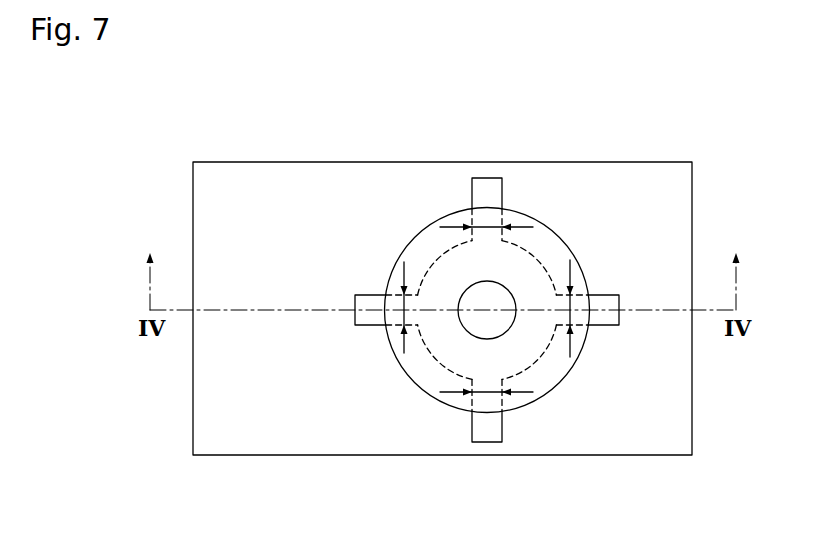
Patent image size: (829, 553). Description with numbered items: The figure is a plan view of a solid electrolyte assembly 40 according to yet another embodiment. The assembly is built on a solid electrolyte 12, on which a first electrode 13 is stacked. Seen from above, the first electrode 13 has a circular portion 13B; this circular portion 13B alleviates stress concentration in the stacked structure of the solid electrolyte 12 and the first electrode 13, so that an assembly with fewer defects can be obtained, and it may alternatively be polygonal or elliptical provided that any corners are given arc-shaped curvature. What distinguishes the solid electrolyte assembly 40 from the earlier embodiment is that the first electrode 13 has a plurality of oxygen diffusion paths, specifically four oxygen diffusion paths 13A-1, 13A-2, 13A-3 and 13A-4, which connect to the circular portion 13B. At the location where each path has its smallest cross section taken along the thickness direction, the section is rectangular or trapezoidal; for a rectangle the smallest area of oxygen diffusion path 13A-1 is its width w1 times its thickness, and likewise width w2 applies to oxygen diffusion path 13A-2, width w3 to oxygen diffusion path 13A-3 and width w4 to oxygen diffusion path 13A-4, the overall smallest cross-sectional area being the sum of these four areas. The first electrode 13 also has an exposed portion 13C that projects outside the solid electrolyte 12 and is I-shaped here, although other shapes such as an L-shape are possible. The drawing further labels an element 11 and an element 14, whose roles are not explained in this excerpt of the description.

The solid electrolyte assembly 40 is at (498, 250).
The base plate 11 is at (678, 437).
The solid electrolyte 12 is at (577, 252).
The first electrode 13 is at (471, 318).
The oxygen diffusion path 13A-1 is at (483, 213).
The oxygen diffusion path 13A-2 is at (592, 322).
The oxygen diffusion path 13A-3 is at (477, 400).
The oxygen diffusion path 13A-4 is at (395, 300).
The circular portion 13B is at (530, 253).
The exposed portion 13C is at (607, 316).
The through hole 14 is at (473, 292).
The width w1 is at (500, 208).
The width w2 is at (577, 302).
The width w3 is at (487, 393).
The width w4 is at (402, 314).